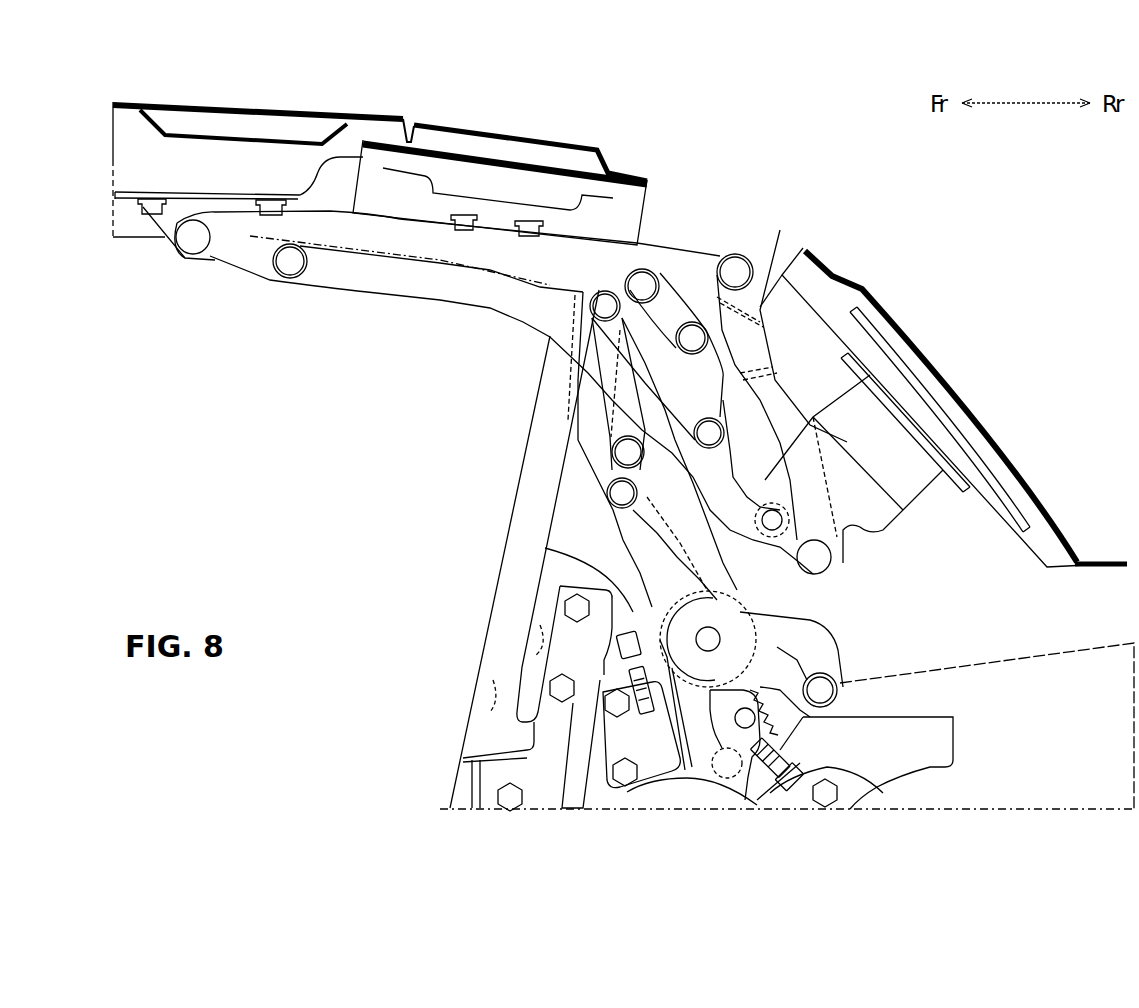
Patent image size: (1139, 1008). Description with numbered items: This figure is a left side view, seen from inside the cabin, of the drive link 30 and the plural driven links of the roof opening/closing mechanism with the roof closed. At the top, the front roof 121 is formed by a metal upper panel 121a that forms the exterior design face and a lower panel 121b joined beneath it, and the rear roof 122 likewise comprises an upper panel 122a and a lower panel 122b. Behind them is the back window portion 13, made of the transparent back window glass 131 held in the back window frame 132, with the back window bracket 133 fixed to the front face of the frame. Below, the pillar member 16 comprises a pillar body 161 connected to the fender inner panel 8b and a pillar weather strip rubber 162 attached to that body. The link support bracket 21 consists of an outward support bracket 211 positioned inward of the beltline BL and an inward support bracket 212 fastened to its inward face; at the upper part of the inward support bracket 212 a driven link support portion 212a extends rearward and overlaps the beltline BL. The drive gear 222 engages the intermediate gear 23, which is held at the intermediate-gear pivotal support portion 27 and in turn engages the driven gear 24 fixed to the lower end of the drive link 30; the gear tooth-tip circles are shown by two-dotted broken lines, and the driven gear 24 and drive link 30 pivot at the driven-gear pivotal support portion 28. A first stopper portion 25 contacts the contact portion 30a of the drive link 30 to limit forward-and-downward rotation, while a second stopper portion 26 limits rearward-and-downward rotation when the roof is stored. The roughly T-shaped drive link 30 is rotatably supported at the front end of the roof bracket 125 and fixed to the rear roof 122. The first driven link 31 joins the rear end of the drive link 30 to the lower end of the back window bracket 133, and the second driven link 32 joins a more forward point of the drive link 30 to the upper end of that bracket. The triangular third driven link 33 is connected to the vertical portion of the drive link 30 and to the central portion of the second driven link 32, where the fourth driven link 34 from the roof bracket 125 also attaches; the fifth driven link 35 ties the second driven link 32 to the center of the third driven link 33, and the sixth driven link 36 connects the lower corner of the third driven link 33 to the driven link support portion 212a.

The front roof 121 is at (385, 85).
The upper panel 121a is at (205, 88).
The lower panel 121b is at (238, 138).
The rear roof 122 is at (536, 128).
The upper panel 122a is at (447, 125).
The lower panel 122b is at (562, 172).
The roof bracket 125 is at (168, 225).
The back window portion 13 is at (873, 280).
The back window glass 131 is at (965, 398).
The back window frame 132 is at (1080, 556).
The back window bracket 133 is at (912, 495).
The pillar member 16 is at (490, 602).
The pillar body 161 is at (540, 652).
The pillar weather strip rubber 162 is at (482, 710).
The link support bracket 21 is at (468, 782).
The outward support bracket 211 is at (910, 760).
The inward support bracket 212 is at (648, 772).
The driven link support portion 212a is at (787, 673).
The drive gear 222 is at (722, 790).
The intermediate gear 23 is at (711, 742).
The driven gear 24 is at (770, 627).
The first stopper portion 25 is at (637, 723).
The second stopper portion 26 is at (780, 782).
The intermediate-gear pivotal support portion 27 is at (745, 780).
The driven-gear pivotal support portion 28 is at (742, 598).
The drive link 30 is at (625, 540).
The contact portion 30a is at (586, 560).
The first driven link 31 is at (776, 262).
The second driven link 32 is at (740, 486).
The third driven link 33 is at (575, 417).
The fourth driven link 34 is at (378, 296).
The fifth driven link 35 is at (608, 412).
The sixth driven link 36 is at (832, 640).
The beltline BL is at (992, 655).
The fender inner panel 8b is at (1072, 773).